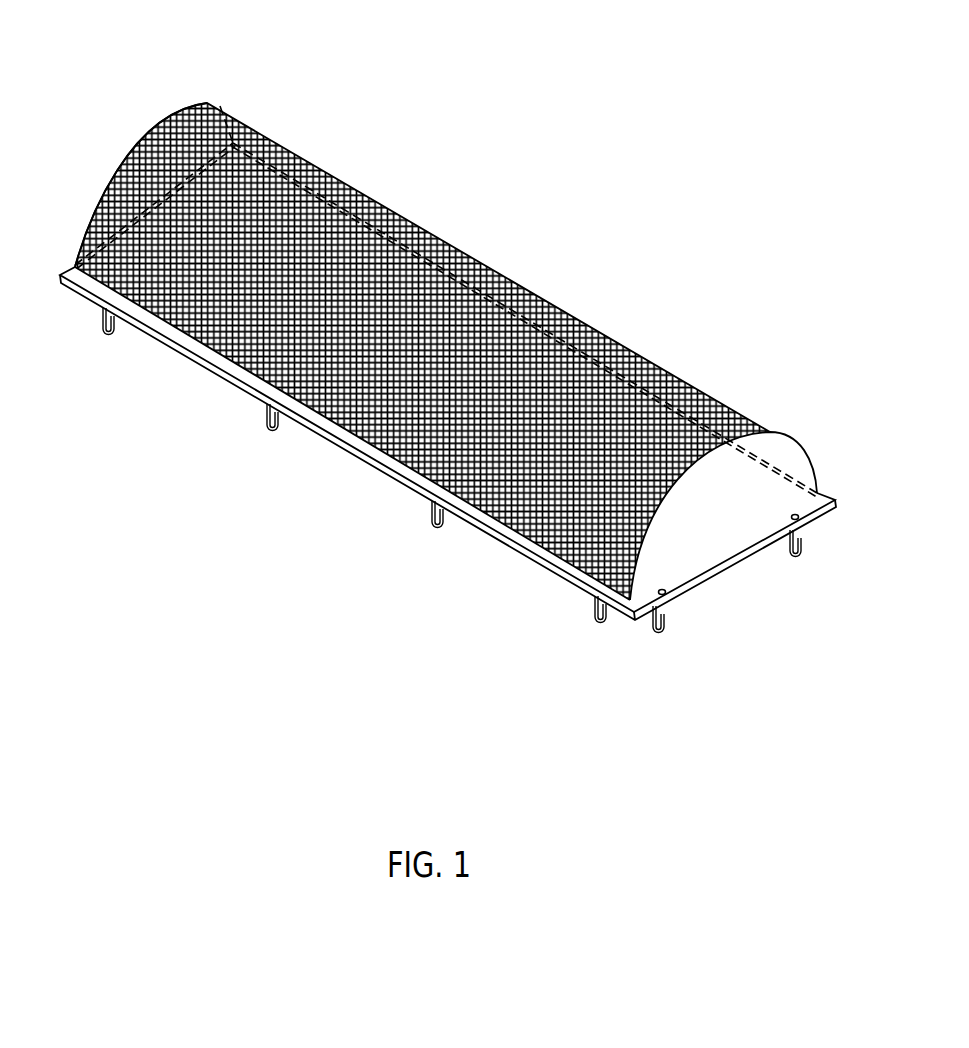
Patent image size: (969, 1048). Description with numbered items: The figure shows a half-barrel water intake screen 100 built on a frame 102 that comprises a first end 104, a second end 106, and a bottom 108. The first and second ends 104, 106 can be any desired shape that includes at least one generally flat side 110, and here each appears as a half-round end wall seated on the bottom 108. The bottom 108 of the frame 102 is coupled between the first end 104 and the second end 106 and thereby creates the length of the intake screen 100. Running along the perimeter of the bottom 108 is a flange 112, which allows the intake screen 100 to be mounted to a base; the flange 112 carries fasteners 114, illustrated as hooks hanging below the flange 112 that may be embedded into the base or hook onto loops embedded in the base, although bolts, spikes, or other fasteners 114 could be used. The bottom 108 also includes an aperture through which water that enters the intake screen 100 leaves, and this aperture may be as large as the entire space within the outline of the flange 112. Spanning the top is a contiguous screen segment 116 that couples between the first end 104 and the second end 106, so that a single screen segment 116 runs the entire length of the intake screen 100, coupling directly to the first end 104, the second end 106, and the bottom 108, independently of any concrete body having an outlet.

The half-barrel water intake screen 100 is at (627, 55).
The frame 102 is at (400, 178).
The first end 104 is at (812, 460).
The second end 106 is at (140, 133).
The bottom 108 is at (175, 365).
The generally flat side 110 is at (100, 243).
The flange 112 is at (316, 437).
The fasteners 114 is at (592, 617).
The contiguous screen segment 116 is at (423, 302).